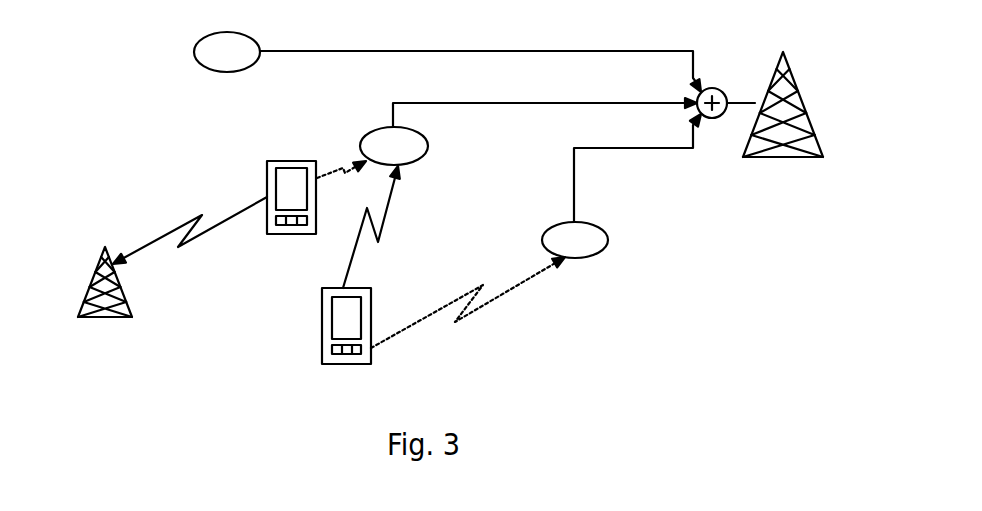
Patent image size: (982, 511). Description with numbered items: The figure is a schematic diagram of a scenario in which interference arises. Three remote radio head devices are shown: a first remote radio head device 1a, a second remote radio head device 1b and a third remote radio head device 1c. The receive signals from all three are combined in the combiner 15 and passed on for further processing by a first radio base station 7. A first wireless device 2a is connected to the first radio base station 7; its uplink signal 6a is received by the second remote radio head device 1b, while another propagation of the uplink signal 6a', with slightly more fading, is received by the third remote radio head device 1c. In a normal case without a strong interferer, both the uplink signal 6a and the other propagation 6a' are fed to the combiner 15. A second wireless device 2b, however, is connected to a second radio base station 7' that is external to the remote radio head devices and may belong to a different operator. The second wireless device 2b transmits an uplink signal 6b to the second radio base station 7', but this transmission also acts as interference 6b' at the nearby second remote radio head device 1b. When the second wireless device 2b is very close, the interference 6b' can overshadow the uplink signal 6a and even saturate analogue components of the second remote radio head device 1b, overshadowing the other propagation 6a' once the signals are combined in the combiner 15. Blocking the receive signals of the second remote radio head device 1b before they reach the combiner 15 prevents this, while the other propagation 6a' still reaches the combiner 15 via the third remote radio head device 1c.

The first remote radio head device 1a is at (243, 63).
The second remote radio head device 1b is at (410, 157).
The third remote radio head device 1c is at (561, 251).
The first wireless device 2a is at (322, 325).
The second wireless device 2b is at (267, 172).
The uplink signal 6a is at (394, 227).
The other propagation of the uplink signal 6a' is at (468, 302).
The uplink signal 6b is at (190, 215).
The interference 6b' is at (328, 149).
The first radio base station 7 is at (784, 86).
The second radio base station 7' is at (89, 282).
The combiner 15 is at (720, 90).